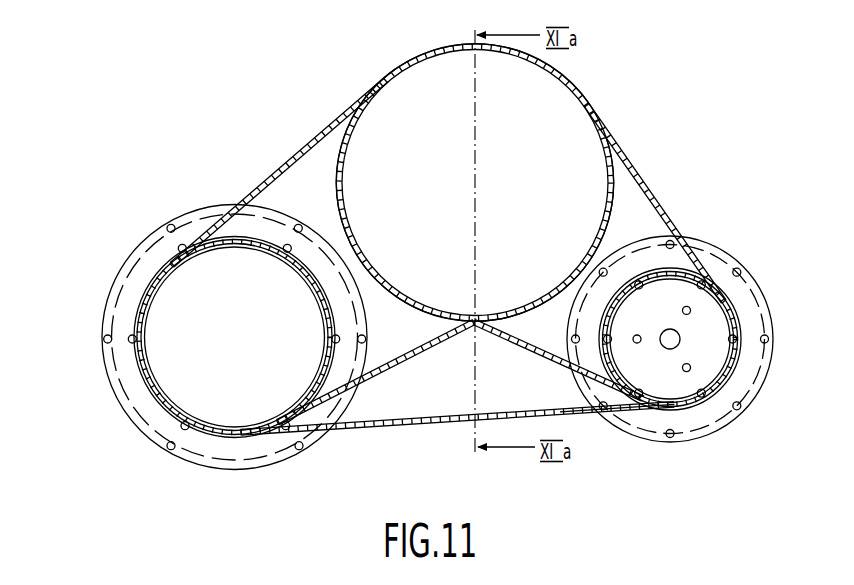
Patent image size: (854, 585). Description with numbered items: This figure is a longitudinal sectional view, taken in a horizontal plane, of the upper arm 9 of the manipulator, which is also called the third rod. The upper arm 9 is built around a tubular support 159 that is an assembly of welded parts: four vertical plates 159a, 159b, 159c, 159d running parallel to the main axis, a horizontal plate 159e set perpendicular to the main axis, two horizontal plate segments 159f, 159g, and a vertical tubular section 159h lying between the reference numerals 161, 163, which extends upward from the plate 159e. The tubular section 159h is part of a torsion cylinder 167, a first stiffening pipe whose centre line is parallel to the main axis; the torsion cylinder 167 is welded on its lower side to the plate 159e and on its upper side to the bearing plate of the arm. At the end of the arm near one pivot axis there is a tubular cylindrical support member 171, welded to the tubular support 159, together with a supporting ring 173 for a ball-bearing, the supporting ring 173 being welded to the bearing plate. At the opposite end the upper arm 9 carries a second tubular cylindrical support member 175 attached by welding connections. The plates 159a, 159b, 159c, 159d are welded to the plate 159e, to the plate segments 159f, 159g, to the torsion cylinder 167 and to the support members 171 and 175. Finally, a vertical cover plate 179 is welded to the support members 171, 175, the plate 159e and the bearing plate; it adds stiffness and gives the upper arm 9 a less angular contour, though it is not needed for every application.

The upper arm 9 is at (584, 423).
The tubular support 159 is at (448, 258).
The vertical plate 159a is at (294, 158).
The vertical plate 159b is at (658, 193).
The vertical plate 159c is at (537, 353).
The vertical plate 159d is at (427, 349).
The horizontal plate 159e is at (371, 416).
The horizontal plate segment 159f is at (379, 319).
The horizontal plate segment 159g is at (556, 321).
The vertical tubular section 159h is at (531, 55).
The reference point 161 is at (366, 92).
The reference point 163 is at (603, 142).
The torsion cylinder 167 is at (475, 183).
The tubular cylindrical support member 171 is at (705, 398).
The supporting ring 173 is at (747, 300).
The tubular cylindrical support member 175 is at (217, 430).
The vertical cover plate 179 is at (458, 437).